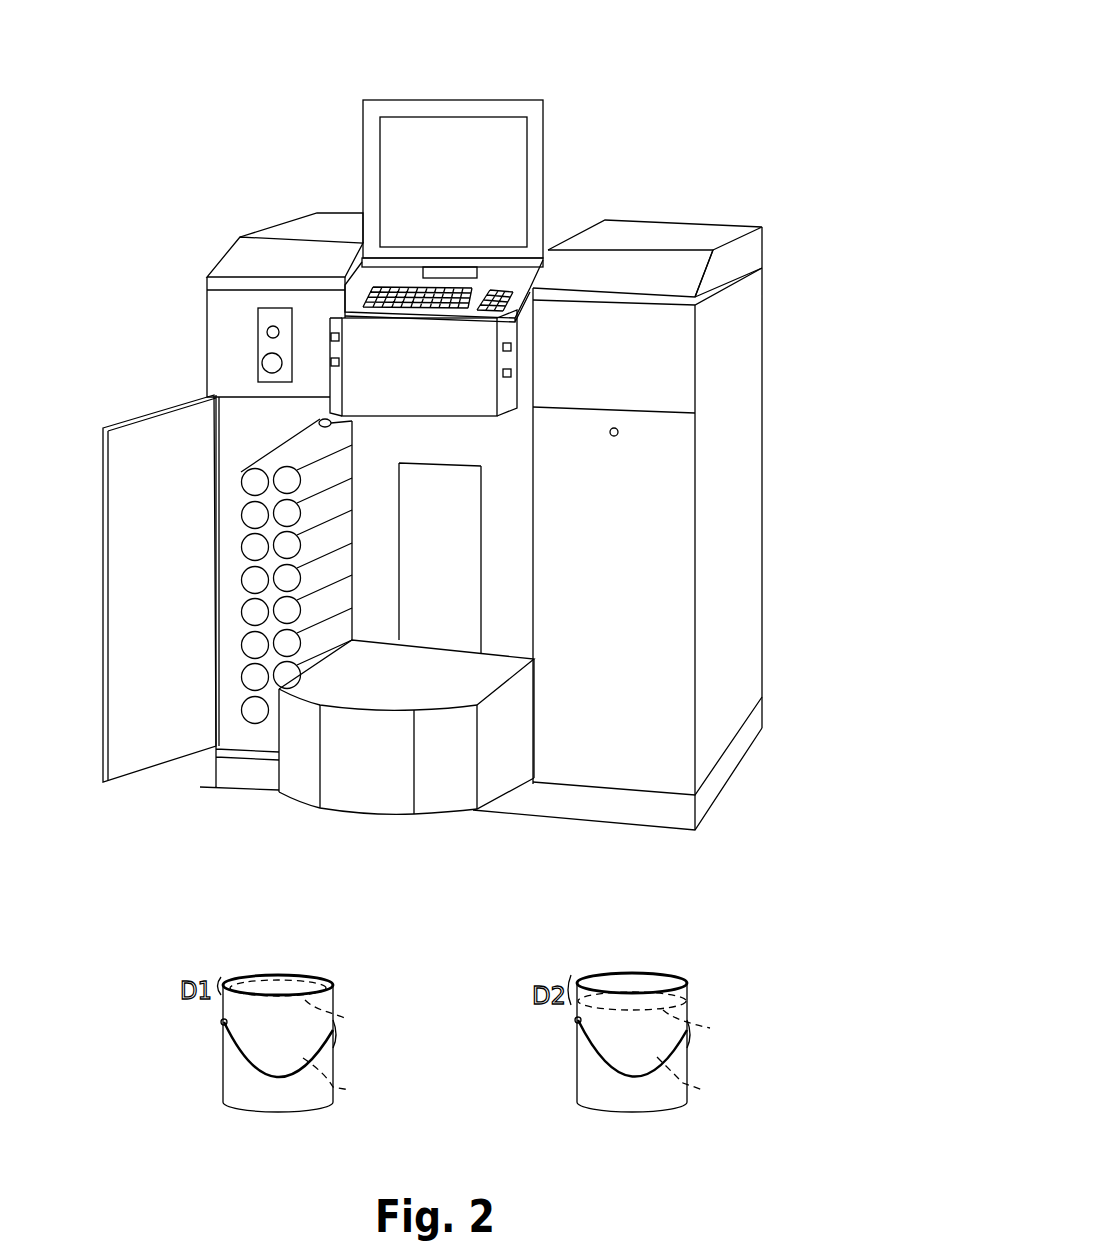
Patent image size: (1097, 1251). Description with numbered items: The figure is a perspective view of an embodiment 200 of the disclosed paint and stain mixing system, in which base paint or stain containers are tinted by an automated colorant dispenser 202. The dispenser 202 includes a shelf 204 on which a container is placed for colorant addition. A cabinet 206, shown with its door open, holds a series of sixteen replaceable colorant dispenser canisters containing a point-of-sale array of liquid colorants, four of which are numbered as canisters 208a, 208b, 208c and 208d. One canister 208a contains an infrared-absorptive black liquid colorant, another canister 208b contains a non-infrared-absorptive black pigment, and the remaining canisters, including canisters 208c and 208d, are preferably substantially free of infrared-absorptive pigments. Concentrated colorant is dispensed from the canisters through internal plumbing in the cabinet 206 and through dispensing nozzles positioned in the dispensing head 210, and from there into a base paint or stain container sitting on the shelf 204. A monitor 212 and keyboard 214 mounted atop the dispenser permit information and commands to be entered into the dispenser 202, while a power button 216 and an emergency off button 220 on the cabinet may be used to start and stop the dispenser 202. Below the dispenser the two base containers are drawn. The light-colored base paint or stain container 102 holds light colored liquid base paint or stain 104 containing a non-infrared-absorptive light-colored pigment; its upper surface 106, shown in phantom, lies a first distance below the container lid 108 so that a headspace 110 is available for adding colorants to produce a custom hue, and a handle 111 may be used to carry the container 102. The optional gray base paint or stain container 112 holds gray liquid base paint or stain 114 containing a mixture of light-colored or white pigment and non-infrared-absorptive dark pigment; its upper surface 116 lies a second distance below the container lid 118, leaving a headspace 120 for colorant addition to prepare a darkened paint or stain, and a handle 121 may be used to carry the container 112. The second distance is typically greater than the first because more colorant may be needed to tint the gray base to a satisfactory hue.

The paint and stain mixing system embodiment 200 is at (673, 67).
The automated colorant dispenser 202 is at (765, 302).
The shelf 204 is at (464, 674).
The cabinet 206 is at (138, 753).
The colorant dispenser canister 208a is at (249, 713).
The colorant dispenser canister 208b is at (249, 677).
The colorant dispenser canister 208c is at (249, 645).
The colorant dispenser canister 208d is at (249, 612).
The dispensing head 210 is at (475, 385).
The monitor 212 is at (505, 180).
The keyboard 214 is at (518, 292).
The power button 216 is at (271, 332).
The emergency off button 220 is at (270, 363).
The light-colored base paint or stain container 102 is at (222, 1067).
The light colored liquid base paint or stain 104 is at (347, 1081).
The upper surface 106 is at (345, 1021).
The container lid 108 is at (283, 980).
The headspace 110 is at (335, 988).
The handle 111 is at (262, 1073).
The gray base paint or stain container 112 is at (575, 1067).
The gray liquid base paint or stain 114 is at (703, 1080).
The upper surface 116 is at (708, 1031).
The container lid 118 is at (637, 985).
The headspace 120 is at (690, 988).
The handle 121 is at (613, 1073).